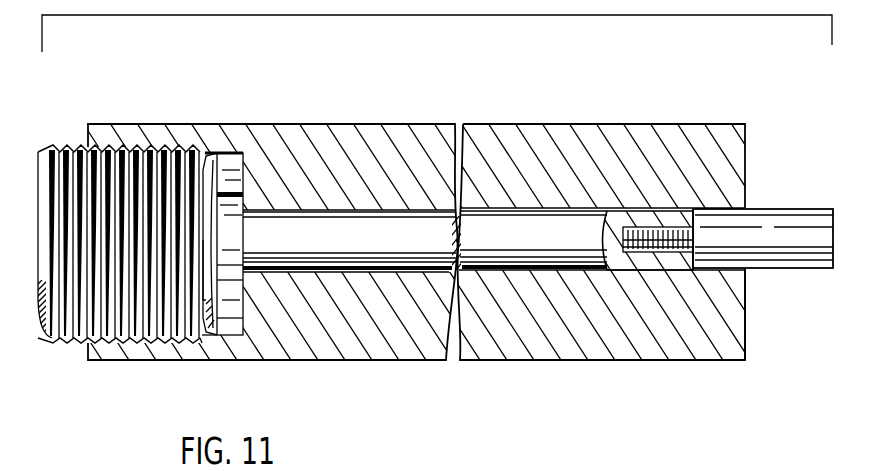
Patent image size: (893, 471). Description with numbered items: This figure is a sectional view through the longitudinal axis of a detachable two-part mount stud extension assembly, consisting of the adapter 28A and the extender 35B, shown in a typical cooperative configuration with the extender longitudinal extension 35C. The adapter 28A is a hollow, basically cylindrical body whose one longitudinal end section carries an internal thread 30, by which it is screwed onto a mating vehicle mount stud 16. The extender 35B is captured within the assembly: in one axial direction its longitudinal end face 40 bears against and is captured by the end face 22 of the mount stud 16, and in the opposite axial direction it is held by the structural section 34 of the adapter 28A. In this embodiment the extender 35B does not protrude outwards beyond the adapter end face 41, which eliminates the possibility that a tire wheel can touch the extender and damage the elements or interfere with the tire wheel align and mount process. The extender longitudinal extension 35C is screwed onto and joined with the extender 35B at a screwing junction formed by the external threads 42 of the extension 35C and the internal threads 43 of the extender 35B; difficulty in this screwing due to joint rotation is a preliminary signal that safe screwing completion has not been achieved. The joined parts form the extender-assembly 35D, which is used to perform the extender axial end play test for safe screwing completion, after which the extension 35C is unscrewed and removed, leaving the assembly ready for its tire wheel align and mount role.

The mount stud 16 is at (88, 147).
The end face of mount stud 22 is at (200, 340).
The adapter 28A is at (280, 148).
The internal thread 30 is at (107, 345).
The structural section of adapter 34 is at (237, 160).
The extender 35B is at (352, 255).
The extender longitudinal extension 35C is at (788, 252).
The extender-assembly 35D is at (518, 223).
The longitudinal end face of extender 40 is at (198, 155).
The adapter end face 41 is at (747, 320).
The external threads 42 is at (640, 262).
The internal threads 43 is at (652, 232).